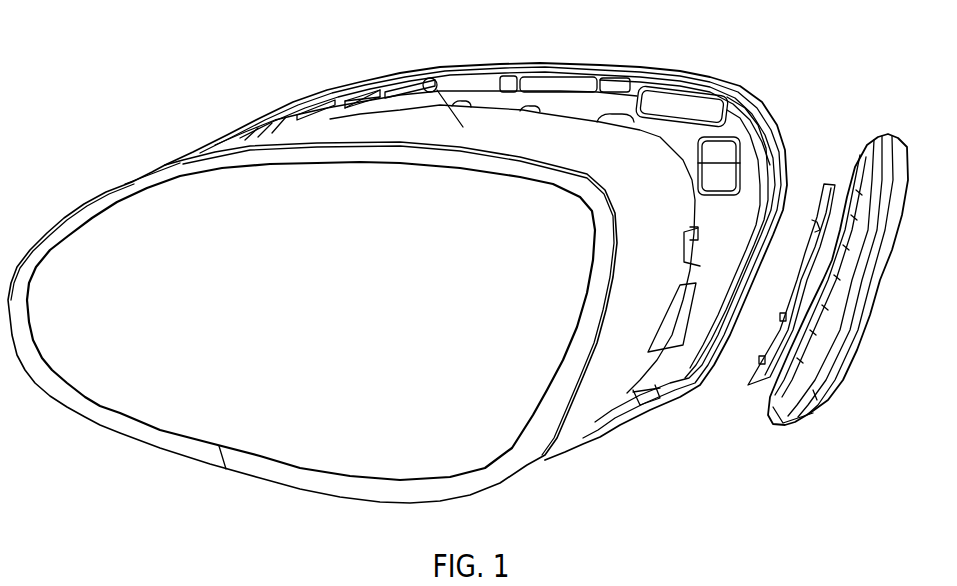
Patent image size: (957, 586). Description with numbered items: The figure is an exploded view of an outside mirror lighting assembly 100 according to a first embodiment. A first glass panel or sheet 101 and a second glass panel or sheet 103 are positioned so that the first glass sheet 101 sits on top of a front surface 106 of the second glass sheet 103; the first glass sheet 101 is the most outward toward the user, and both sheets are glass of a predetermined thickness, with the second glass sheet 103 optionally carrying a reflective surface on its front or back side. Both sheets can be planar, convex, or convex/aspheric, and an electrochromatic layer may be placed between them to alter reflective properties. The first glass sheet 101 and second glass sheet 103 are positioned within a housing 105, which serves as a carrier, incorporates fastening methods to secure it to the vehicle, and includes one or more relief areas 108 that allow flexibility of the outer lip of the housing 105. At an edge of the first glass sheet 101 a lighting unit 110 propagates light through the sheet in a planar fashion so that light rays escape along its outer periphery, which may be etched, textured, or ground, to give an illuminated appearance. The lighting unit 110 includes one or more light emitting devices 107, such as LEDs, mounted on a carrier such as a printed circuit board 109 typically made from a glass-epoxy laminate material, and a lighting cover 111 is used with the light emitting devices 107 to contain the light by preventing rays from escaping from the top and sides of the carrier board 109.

The outside mirror lighting assembly 100 is at (116, 57).
The first glass panel or sheet 101 is at (207, 405).
The second glass panel or sheet 103 is at (576, 423).
The housing 105 is at (700, 83).
The front surface 106 is at (432, 72).
The light emitting devices 107 is at (817, 221).
The relief areas 108 is at (563, 83).
The printed circuit (PC) board 109 is at (827, 180).
The lighting unit 110 is at (806, 117).
The lighting cover 111 is at (838, 373).